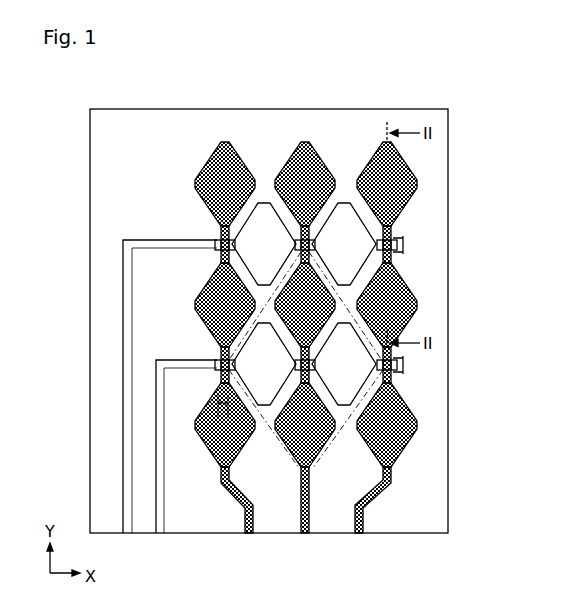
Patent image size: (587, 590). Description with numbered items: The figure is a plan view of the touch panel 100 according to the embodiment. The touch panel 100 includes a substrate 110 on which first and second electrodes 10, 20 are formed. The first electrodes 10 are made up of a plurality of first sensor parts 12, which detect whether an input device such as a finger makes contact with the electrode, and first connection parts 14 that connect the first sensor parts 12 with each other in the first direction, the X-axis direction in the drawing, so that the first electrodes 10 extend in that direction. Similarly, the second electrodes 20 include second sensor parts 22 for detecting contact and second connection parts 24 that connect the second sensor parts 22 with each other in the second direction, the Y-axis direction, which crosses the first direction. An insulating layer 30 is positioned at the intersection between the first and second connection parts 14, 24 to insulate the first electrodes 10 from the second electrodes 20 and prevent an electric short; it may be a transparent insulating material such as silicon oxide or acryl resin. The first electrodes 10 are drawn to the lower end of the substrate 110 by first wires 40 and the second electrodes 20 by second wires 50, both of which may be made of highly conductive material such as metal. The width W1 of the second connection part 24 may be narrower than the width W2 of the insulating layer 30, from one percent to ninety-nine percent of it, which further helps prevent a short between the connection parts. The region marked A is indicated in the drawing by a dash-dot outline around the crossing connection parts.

The touch panel 100 is at (278, 135).
The substrate 110 is at (449, 130).
The first electrodes 10 is at (325, 261).
The first sensor parts 12 is at (342, 202).
The first connection parts 14 is at (312, 236).
The second electrodes 20 is at (194, 191).
The second sensor parts 22 is at (213, 164).
The second connection parts 24 is at (240, 243).
The insulating layer 30 is at (194, 272).
The first wires 40 is at (162, 425).
The second wires 50 is at (376, 505).
The width of the second connection part W1 is at (217, 402).
The width of the insulating layer W2 is at (222, 418).
The region A is at (283, 452).